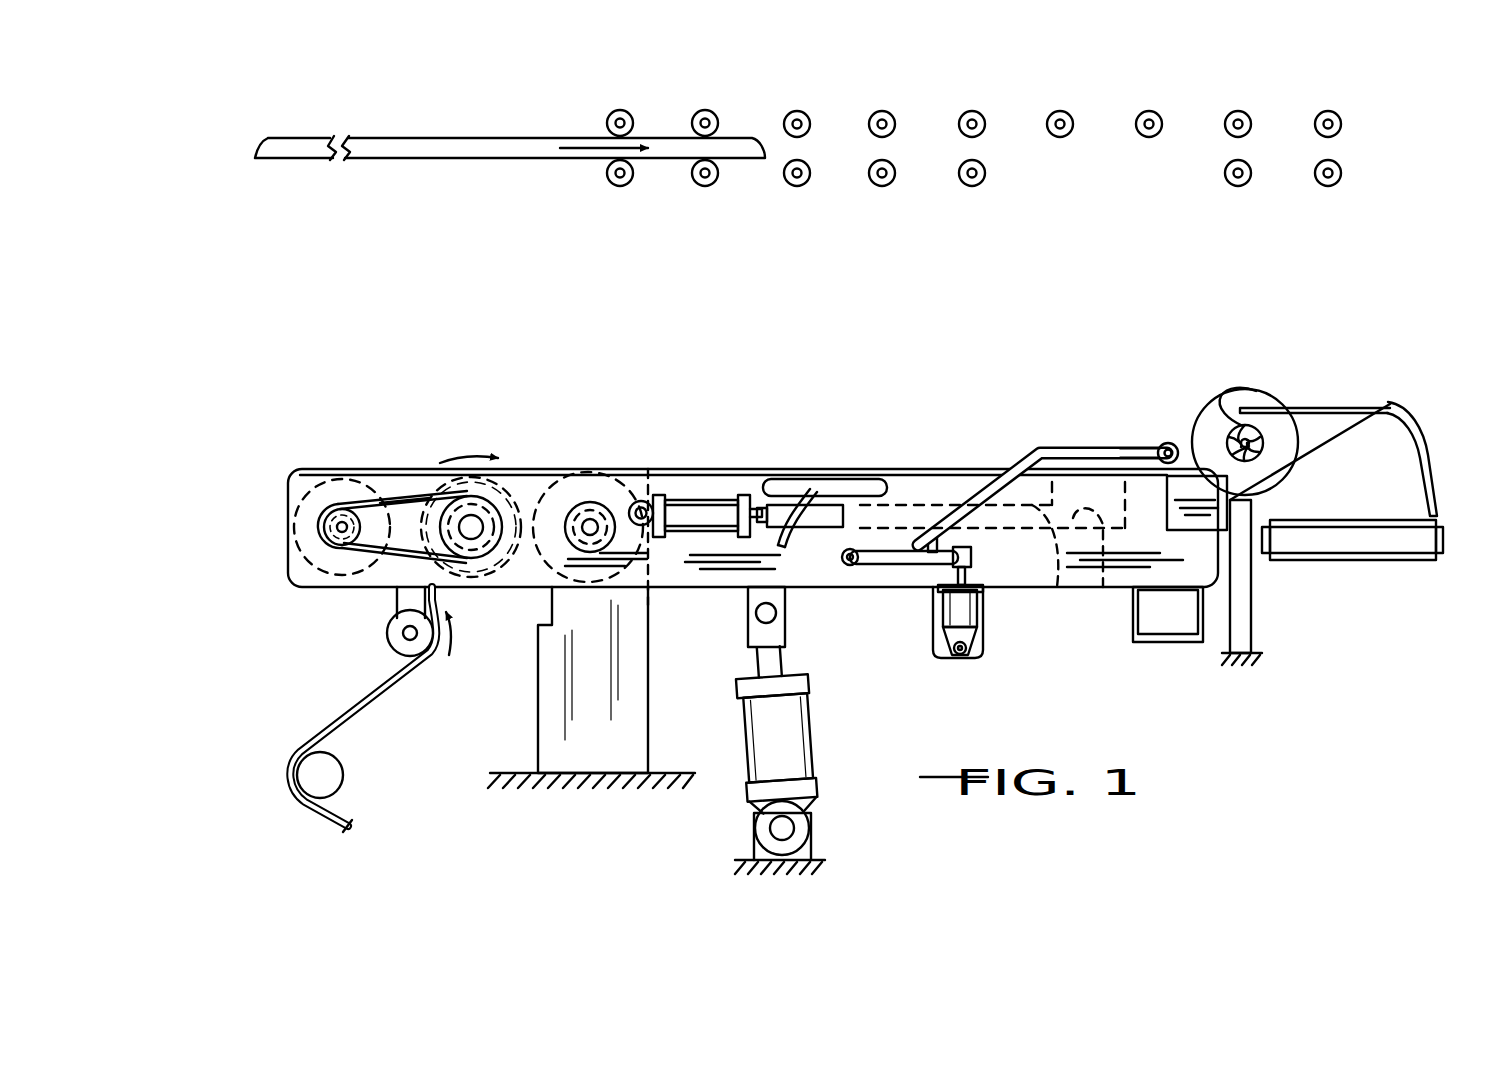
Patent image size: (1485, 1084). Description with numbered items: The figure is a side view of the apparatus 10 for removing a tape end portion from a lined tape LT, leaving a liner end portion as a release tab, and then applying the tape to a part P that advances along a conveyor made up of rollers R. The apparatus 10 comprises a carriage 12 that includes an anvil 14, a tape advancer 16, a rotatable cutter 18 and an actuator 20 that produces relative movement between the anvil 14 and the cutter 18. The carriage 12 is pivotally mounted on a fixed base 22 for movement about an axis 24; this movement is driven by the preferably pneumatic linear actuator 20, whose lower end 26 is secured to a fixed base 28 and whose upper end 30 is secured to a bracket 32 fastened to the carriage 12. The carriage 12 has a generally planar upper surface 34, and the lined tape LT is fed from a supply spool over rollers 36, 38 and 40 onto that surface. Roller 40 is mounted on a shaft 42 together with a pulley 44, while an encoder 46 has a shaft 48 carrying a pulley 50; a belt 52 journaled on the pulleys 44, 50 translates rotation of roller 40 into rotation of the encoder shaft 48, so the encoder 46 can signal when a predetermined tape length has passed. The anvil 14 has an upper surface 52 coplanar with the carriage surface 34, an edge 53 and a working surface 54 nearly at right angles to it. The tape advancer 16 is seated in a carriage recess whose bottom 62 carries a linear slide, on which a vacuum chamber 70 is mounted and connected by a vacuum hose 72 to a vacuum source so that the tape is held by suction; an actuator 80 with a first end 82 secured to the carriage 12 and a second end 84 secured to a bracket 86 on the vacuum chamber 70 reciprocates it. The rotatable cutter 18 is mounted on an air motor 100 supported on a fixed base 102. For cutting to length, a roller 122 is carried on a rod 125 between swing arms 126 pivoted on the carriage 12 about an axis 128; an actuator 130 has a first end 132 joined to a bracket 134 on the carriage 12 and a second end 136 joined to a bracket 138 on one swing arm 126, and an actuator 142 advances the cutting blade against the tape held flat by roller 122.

The apparatus 10 is at (1220, 742).
The carriage 12 is at (858, 594).
The anvil 14 is at (1240, 538).
The tape advancer 16 is at (921, 452).
The rotatable cutter 18 is at (1241, 390).
The actuator 20 is at (815, 744).
The fixed base 22 is at (650, 696).
The axis 24 is at (592, 520).
The lower end 26 is at (812, 809).
The fixed base 28 is at (750, 849).
The upper end 30 is at (786, 593).
The bracket 32 is at (748, 596).
The upper surface 34 is at (360, 484).
The roller 36 is at (350, 775).
The roller 38 is at (385, 633).
The roller 40 is at (530, 478).
The shaft 42 is at (467, 520).
The pulley 44 is at (490, 472).
The encoder 46 is at (290, 495).
The shaft 48 is at (342, 528).
The pulley 50 is at (360, 506).
The belt 52 is at (395, 500).
The edge 53 is at (1392, 410).
The working surface 54 is at (1250, 506).
The bottom 62 is at (1077, 567).
The vacuum chamber 70 is at (958, 590).
The vacuum hose 72 is at (805, 541).
The actuator 80 is at (705, 498).
The first end 82 is at (643, 501).
The second end 84 is at (772, 488).
The bracket 86 is at (790, 490).
The motor 100 is at (1305, 396).
The fixed base 102 is at (1253, 612).
The roller 122 is at (1163, 443).
The rod 125 is at (1168, 441).
The swing arms 126 is at (1043, 448).
The axis 128 is at (853, 548).
The actuator 130 is at (940, 634).
The first end 132 is at (985, 655).
The bracket 134 is at (990, 643).
The second end 136 is at (975, 555).
The bracket 138 is at (926, 574).
The actuator 142 is at (1166, 642).
The part P is at (440, 135).
The rollers R is at (806, 114).
The lined tape LT is at (385, 700).